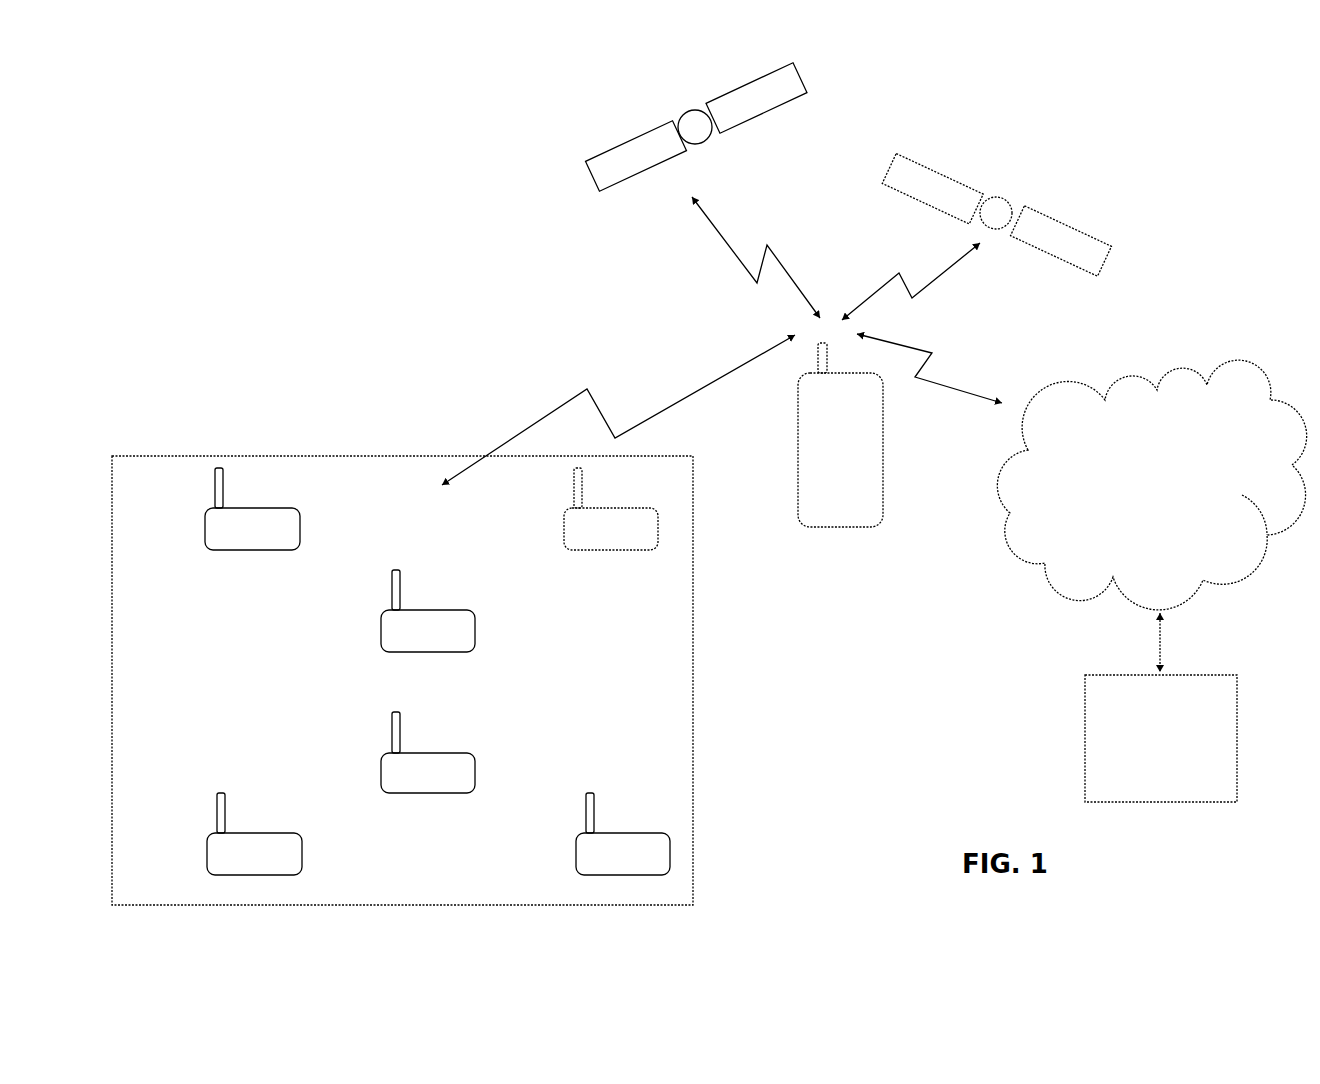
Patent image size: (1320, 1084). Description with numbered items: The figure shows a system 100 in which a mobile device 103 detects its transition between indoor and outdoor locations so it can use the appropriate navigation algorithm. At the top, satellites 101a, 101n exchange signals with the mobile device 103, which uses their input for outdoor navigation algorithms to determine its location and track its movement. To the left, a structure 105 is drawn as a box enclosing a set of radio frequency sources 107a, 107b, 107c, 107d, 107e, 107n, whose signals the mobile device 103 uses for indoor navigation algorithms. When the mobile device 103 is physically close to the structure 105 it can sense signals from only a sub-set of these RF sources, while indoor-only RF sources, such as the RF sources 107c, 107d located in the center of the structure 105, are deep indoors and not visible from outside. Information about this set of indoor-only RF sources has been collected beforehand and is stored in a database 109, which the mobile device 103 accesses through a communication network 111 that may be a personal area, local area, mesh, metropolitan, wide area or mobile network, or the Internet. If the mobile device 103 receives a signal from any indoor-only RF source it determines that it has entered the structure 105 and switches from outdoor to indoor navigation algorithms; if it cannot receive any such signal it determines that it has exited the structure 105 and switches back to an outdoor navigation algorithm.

The system 100 is at (1191, 125).
The satellite 101a is at (640, 125).
The satellite 101n is at (883, 171).
The mobile device 103 is at (798, 435).
The structure 105 is at (678, 491).
The radio frequency source 107a is at (205, 532).
The radio frequency source 107b is at (207, 853).
The radio frequency source 107c is at (381, 632).
The radio frequency source 107d is at (381, 773).
The radio frequency source 107e is at (564, 532).
The radio frequency source 107n is at (576, 853).
The database 109 is at (1145, 773).
The communication network 111 is at (1173, 498).